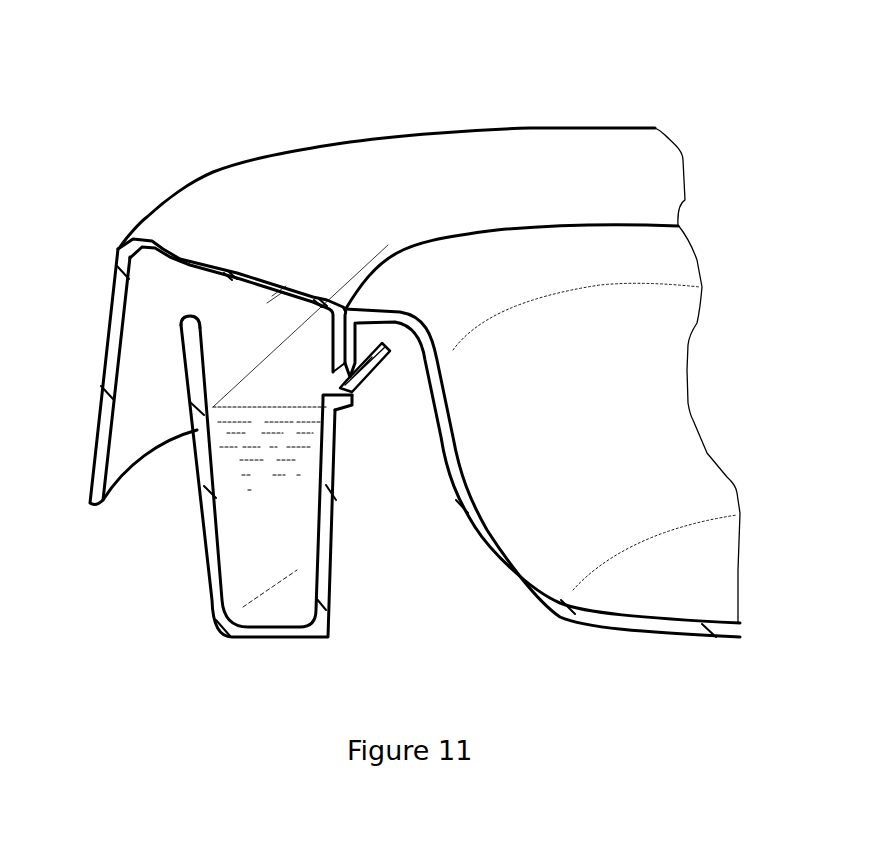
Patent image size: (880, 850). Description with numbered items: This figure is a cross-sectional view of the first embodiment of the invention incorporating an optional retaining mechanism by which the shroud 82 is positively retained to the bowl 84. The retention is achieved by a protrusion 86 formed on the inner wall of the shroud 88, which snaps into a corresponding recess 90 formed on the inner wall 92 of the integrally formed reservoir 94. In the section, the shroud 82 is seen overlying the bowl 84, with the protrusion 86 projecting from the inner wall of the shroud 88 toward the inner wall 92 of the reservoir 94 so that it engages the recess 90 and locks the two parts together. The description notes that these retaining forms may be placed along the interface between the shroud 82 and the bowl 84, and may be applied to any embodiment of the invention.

The shroud 82 is at (278, 195).
The bowl 84 is at (688, 486).
The protrusion 86 is at (343, 377).
The inner wall of the shroud 88 is at (352, 335).
The recess 90 is at (388, 352).
The inner wall of the reservoir 92 is at (362, 331).
The integrally formed reservoir 94 is at (247, 548).